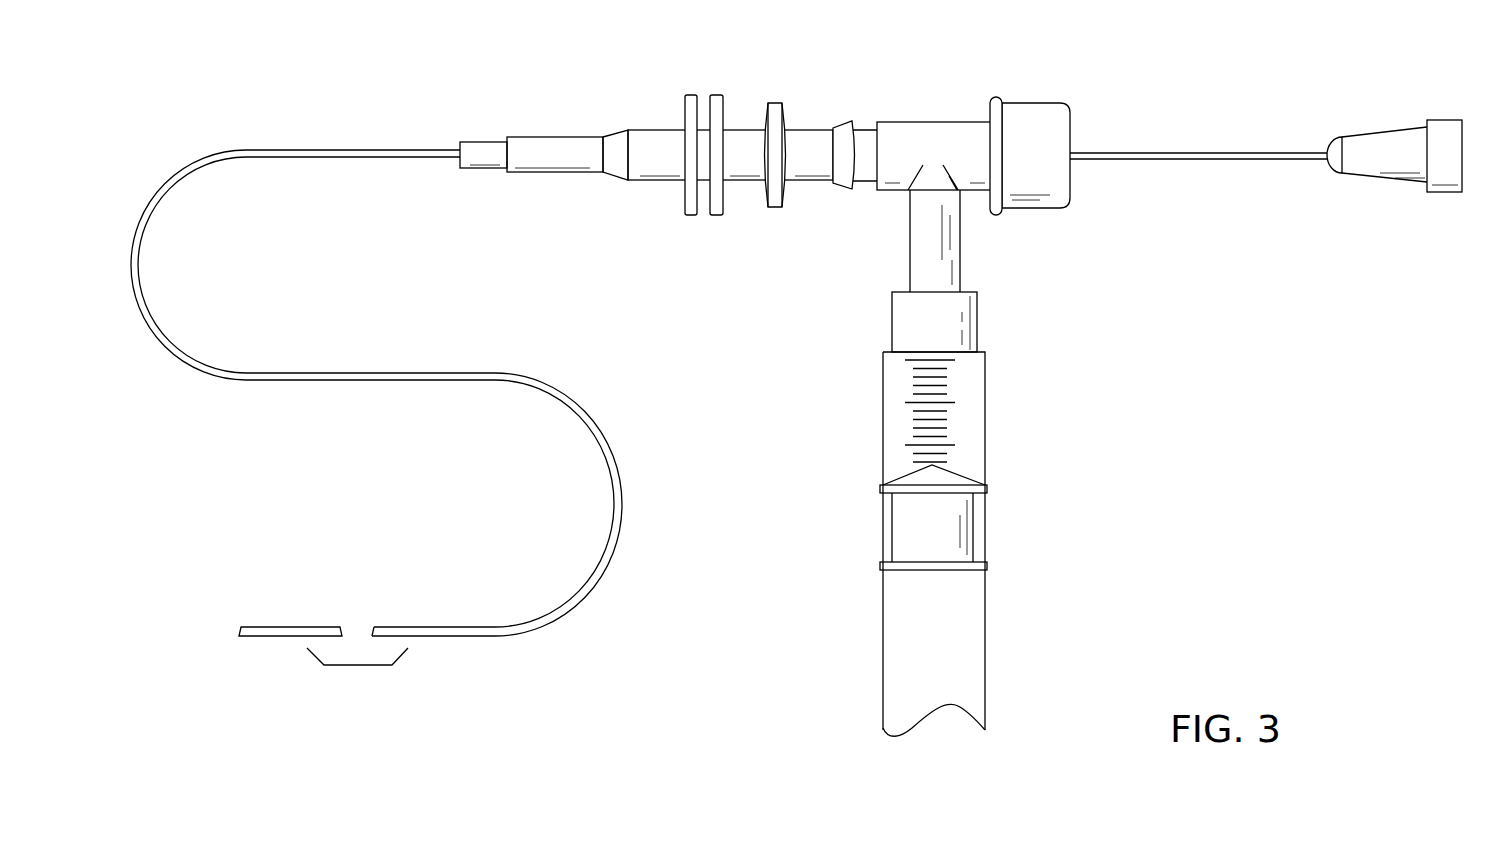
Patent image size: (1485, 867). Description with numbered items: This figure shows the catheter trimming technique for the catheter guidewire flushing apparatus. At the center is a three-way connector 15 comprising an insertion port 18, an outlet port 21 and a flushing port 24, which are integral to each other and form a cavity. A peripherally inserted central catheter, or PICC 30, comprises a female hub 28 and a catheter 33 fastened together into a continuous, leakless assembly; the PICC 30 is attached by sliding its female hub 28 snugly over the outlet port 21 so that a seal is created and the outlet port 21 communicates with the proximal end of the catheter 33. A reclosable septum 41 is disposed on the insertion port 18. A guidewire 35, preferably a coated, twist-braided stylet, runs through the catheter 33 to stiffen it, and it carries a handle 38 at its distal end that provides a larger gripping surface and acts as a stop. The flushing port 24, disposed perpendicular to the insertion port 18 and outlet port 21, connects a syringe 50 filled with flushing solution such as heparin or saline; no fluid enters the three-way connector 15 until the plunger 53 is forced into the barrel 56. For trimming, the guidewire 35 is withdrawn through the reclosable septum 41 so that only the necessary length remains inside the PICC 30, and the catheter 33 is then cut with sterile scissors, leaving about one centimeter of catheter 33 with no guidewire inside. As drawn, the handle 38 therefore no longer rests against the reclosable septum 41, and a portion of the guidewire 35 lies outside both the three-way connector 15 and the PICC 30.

The peripherally inserted central catheter 30 is at (360, 130).
The catheter 33 is at (214, 151).
The female hub 28 is at (648, 137).
The outlet port 21 is at (808, 141).
The three-way connector 15 is at (902, 118).
The insertion port 18 is at (947, 133).
The reclosable septum 41 is at (1033, 112).
The guidewire 35 is at (1222, 152).
The handle 38 is at (1435, 126).
The flushing port 24 is at (902, 267).
The syringe 50 is at (987, 408).
The plunger 53 is at (972, 568).
The barrel 56 is at (890, 584).